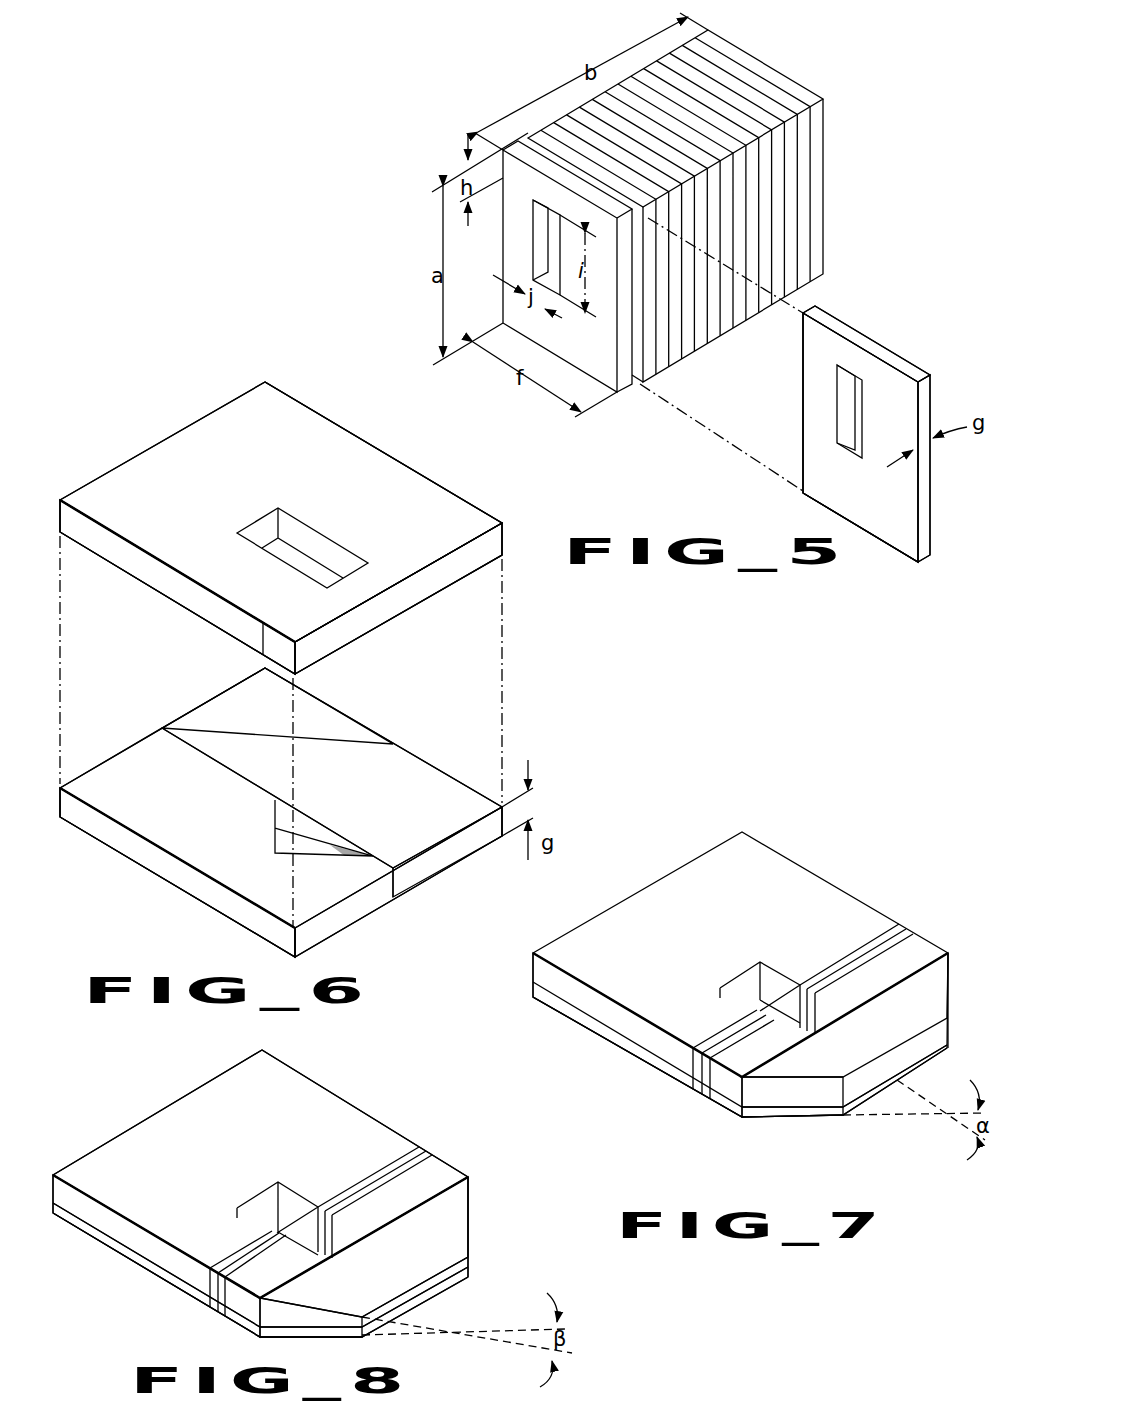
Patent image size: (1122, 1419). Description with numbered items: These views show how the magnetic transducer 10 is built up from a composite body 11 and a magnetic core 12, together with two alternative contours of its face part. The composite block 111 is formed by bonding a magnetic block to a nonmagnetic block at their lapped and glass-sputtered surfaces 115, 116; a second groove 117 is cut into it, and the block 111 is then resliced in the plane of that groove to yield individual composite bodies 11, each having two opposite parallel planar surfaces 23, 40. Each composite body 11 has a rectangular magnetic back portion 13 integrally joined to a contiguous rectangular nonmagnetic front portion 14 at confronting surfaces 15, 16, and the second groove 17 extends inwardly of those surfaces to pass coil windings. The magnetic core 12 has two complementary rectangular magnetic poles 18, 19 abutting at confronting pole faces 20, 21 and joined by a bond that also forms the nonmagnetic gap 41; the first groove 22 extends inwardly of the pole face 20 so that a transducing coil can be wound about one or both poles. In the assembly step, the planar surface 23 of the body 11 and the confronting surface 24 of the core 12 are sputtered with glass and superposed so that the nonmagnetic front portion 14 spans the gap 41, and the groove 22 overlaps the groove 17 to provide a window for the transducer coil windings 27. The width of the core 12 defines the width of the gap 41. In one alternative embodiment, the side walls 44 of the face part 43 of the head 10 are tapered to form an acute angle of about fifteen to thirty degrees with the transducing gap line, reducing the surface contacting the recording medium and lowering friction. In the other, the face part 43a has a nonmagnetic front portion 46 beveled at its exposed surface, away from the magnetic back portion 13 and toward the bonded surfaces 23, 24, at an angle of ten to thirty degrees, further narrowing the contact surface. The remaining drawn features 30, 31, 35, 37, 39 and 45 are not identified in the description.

In FIG. 7, the magnetic transducer 10 is at (761, 978).
In FIG. 8, the magnetic transducer 10 is at (312, 1201).
In FIG. 5, the composite body 11 is at (856, 418).
In FIG. 6, the composite body 11 is at (281, 528).
In FIG. 6, the magnetic core 12 is at (281, 812).
In FIG. 5, the magnetic back portion 13 is at (815, 431).
In FIG. 6, the magnetic back portion 13 is at (266, 472).
In FIG. 8, the magnetic back portion 13 is at (216, 1149).
In FIG. 5, the nonmagnetic front portion 14 is at (884, 379).
In FIG. 6, the nonmagnetic front portion 14 is at (423, 567).
In FIG. 5, the confronting surface 15 is at (830, 344).
In FIG. 6, the confronting surface 15 is at (383, 512).
In FIG. 5, the confronting surface 16 is at (817, 360).
In FIG. 6, the confronting surface 16 is at (453, 513).
In FIG. 6, the second groove 17 is at (285, 552).
In FIG. 6, the magnetic pole 18 is at (243, 888).
In FIG. 6, the magnetic pole 19 is at (383, 750).
In FIG. 6, the pole face 20 is at (277, 794).
In FIG. 6, the pole face 21 is at (200, 750).
In FIG. 6, the first groove 22 is at (282, 837).
In FIG. 5, the planar surface 23 is at (862, 495).
In FIG. 6, the planar surface 23 is at (130, 577).
In FIG. 8, the planar surface 23 is at (156, 1271).
In FIG. 6, the confronting surface 24 is at (176, 792).
In FIG. 8, the confronting surface 24 is at (237, 1318).
In FIG. 7, the transducer coil windings 27 is at (850, 948).
In FIG. 8, the transducer coil windings 27 is at (358, 1180).
In FIG. 6, the lateral face of second core half 30 is at (350, 913).
In FIG. 6, the end face portion 31 is at (447, 860).
In FIG. 6, the chamfer surface 35 is at (348, 842).
In FIG. 6, the lateral face 37 is at (158, 882).
In FIG. 7, the lateral face 37 is at (655, 1068).
In FIG. 8, the lateral face 37 is at (148, 1273).
In FIG. 5, the end portion of first core half 39 is at (903, 367).
In FIG. 6, the end portion of first core half 39 is at (407, 597).
In FIG. 5, the planar surface 40 is at (932, 523).
In FIG. 6, the planar surface 40 is at (187, 550).
In FIG. 6, the nonmagnetic gap 41 is at (397, 887).
In FIG. 7, the nonmagnetic gap 41 is at (898, 1082).
In FIG. 8, the nonmagnetic gap 41 is at (413, 1302).
In FIG. 7, the face part 43 is at (892, 1034).
In FIG. 8, the face part 43a is at (425, 1259).
In FIG. 7, the side walls 44 is at (948, 985).
In FIG. 8, the side walls 44 is at (470, 1233).
In FIG. 7, the lower layer (substrate) 45 is at (840, 890).
In FIG. 8, the lower layer (substrate) 45 is at (352, 1102).
In FIG. 8, the nonmagnetic front portion 46 is at (303, 1285).
In FIG. 5, the composite block 111 is at (719, 201).
In FIG. 5, the upper surface 115 is at (733, 206).
In FIG. 5, the lower planar surface 116 is at (815, 142).
In FIG. 5, the second groove 117 is at (546, 240).